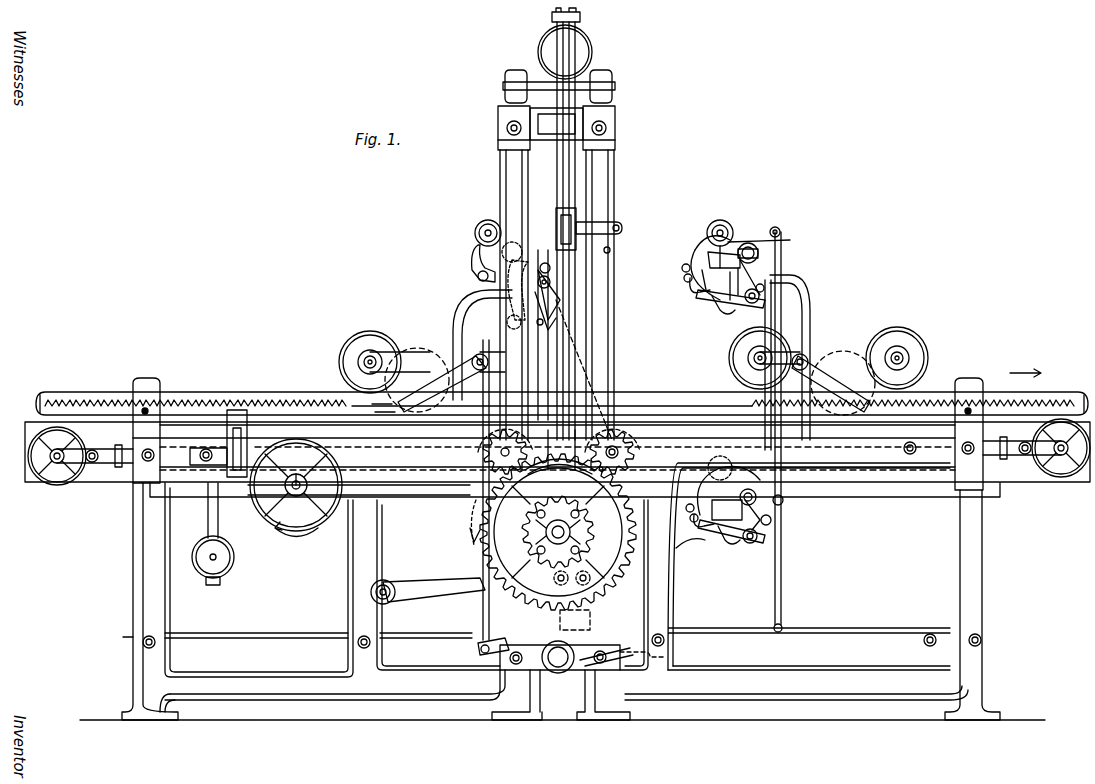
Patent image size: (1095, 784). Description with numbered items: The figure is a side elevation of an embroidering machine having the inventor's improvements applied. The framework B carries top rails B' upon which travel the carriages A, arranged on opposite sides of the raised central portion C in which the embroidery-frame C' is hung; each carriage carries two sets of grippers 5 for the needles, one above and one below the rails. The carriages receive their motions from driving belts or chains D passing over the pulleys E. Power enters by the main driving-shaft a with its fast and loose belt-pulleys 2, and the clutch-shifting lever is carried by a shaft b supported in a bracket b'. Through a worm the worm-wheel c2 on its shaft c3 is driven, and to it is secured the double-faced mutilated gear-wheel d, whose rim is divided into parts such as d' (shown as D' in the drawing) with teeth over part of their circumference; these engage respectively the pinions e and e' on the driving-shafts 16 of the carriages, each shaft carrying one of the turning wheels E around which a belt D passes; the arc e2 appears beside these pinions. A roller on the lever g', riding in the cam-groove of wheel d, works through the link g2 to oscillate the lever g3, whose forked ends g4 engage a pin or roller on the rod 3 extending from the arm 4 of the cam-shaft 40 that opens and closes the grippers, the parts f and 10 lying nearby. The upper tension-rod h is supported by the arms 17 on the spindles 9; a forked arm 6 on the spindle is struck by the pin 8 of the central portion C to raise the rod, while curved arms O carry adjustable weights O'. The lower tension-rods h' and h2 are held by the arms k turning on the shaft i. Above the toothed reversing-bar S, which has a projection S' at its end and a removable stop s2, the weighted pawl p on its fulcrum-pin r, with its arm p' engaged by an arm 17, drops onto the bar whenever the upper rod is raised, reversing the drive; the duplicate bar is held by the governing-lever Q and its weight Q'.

The framework B is at (550, 591).
The top rails B' is at (558, 430).
The raised central portion C is at (567, 224).
The embroidery-frame C' is at (591, 345).
The first toothed part of mutilated gear rim D' is at (557, 468).
The driving belts or chains D is at (359, 490).
The pulleys E is at (32, 478).
The reversing-bar S is at (562, 392).
The projection S' is at (545, 389).
The removable stop s2 is at (730, 420).
The carriages A is at (633, 353).
The fulcrum-pin r is at (589, 361).
The pawl p is at (623, 381).
The arm p' is at (632, 357).
The main driving-shaft a is at (296, 485).
The fast and loose belt-pulleys 2 is at (296, 539).
The shaft b is at (247, 443).
The bracket b' is at (211, 461).
The governing-lever Q is at (198, 510).
The weight Q' is at (224, 562).
The pinion e is at (495, 451).
The pinion e' is at (623, 451).
The arc segment e2 is at (612, 478).
The driving-shafts of the carriages 16 is at (556, 456).
The worm-wheel c2 is at (558, 532).
The shaft c3 is at (570, 532).
The double-faced mutilated gear-wheel d is at (562, 580).
The cam follower f is at (476, 523).
The lever g' is at (428, 584).
The link g2 is at (578, 612).
The oscillating lever g3 is at (620, 660).
The forked ends g4 is at (680, 603).
The rod 3 is at (484, 612).
The arm 4 is at (475, 266).
The grippers 5 is at (712, 255).
The forked arm 6 is at (712, 240).
The pin 8 is at (610, 254).
The shaft or spindle 9 is at (752, 540).
The pin 10 is at (742, 300).
The arms 17 is at (704, 300).
The cam-shaft 40 is at (500, 222).
The curved arms O is at (751, 250).
The adjustable weights O' is at (720, 233).
The upper tension-rod h is at (689, 400).
The lower tension-rod h' is at (675, 393).
The lower tension-rod h2 is at (690, 270).
The shaft i is at (710, 315).
The arms k is at (548, 300).
The first toothed part of mutilated gear rim d' is at (688, 551).